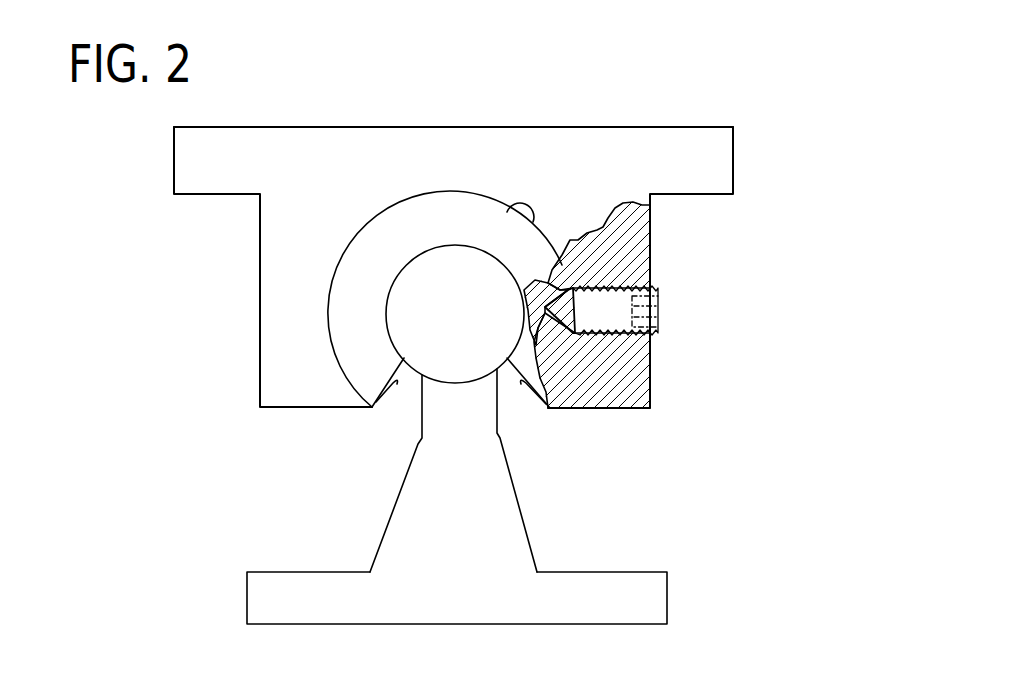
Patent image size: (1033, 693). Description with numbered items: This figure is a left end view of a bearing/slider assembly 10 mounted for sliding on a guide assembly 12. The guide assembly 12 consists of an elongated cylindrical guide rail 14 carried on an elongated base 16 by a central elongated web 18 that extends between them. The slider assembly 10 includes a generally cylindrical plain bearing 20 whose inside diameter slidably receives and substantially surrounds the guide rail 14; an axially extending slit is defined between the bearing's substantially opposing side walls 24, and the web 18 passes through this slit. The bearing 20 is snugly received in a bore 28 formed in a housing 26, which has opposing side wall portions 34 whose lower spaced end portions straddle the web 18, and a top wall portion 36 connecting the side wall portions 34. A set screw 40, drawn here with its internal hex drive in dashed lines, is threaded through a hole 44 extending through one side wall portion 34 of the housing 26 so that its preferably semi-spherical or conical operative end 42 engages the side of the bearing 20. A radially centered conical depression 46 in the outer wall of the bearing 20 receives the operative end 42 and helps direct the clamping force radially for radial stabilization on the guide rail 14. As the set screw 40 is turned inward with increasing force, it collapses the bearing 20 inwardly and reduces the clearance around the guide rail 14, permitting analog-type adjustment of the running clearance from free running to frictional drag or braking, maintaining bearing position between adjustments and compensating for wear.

The bearing/slider assembly 10 is at (562, 70).
The guide assembly 12 is at (606, 524).
The guide rail 14 is at (387, 340).
The base 16 is at (668, 604).
The web 18 is at (388, 521).
The plain bearing 20 is at (340, 265).
The side walls 24 is at (397, 384).
The housing 26 is at (170, 160).
The bore 28 is at (537, 223).
The side wall portions 34 is at (260, 333).
The top wall portion 36 is at (452, 127).
The set screw 40 is at (658, 332).
The operative end 42 is at (560, 313).
The hole 44 is at (617, 337).
The conical depression 46 is at (578, 248).